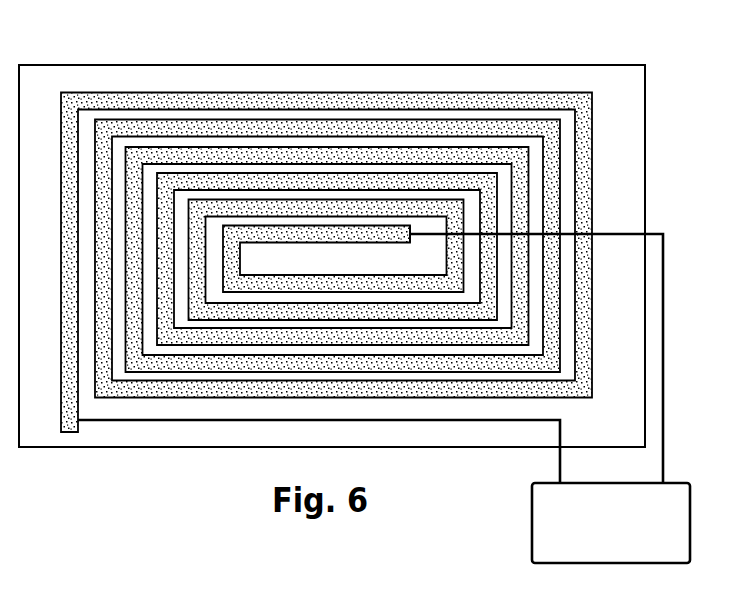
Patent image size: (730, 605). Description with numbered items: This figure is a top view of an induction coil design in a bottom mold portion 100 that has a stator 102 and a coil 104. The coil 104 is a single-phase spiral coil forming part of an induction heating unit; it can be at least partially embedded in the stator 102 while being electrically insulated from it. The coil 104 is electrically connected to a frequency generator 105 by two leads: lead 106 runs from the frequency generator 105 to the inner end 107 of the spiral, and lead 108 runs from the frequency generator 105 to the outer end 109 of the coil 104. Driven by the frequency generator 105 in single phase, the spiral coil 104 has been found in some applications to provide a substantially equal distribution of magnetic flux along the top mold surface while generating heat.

The bottom mold portion 100 is at (244, 58).
The stator 102 is at (604, 119).
The coil 104 is at (158, 92).
The frequency generator 105 is at (531, 525).
The lead 106 is at (664, 458).
The end 107 is at (410, 244).
The lead 108 is at (559, 462).
The end 109 is at (71, 434).